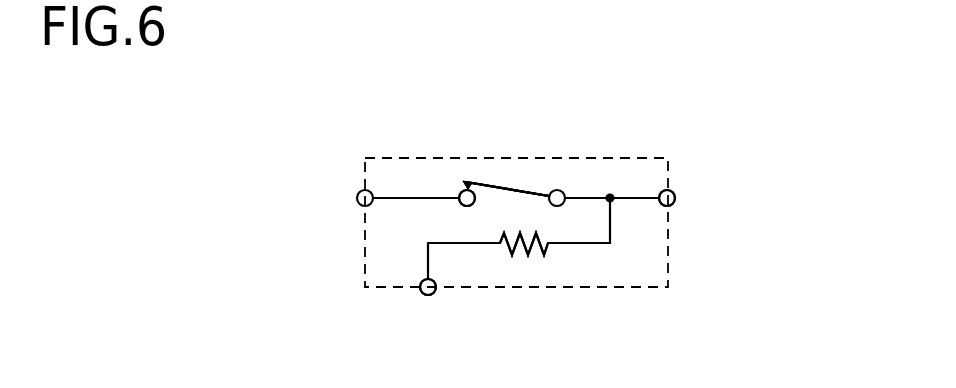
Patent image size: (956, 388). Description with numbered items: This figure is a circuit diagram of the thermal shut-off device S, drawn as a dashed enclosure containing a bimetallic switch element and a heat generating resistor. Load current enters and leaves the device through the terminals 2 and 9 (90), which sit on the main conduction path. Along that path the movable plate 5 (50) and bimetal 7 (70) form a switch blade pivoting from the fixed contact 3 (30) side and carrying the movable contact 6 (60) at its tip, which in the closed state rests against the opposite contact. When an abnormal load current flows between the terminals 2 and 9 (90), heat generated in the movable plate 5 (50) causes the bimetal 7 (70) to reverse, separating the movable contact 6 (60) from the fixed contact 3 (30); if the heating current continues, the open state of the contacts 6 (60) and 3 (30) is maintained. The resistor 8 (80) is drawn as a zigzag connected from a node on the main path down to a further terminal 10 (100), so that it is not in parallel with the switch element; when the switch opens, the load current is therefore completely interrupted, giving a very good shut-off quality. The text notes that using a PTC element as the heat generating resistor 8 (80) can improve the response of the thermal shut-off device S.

The thermal shut-off device S is at (683, 140).
The terminal 2 is at (357, 198).
The fixed contact 3 is at (458, 190).
The fixed contact 30 is at (467, 198).
The movable plate 5 is at (510, 188).
The movable plate 50 is at (507, 189).
The movable contact 6 is at (466, 182).
The movable contact 60 is at (467, 185).
The bimetal 7 is at (507, 189).
The bimetal 70 is at (507, 189).
The resistor 8 is at (525, 255).
The resistor 80 is at (524, 244).
The terminal 9 is at (675, 198).
The terminal 90 is at (667, 198).
The third terminal 10 is at (413, 315).
The third terminal 100 is at (428, 287).